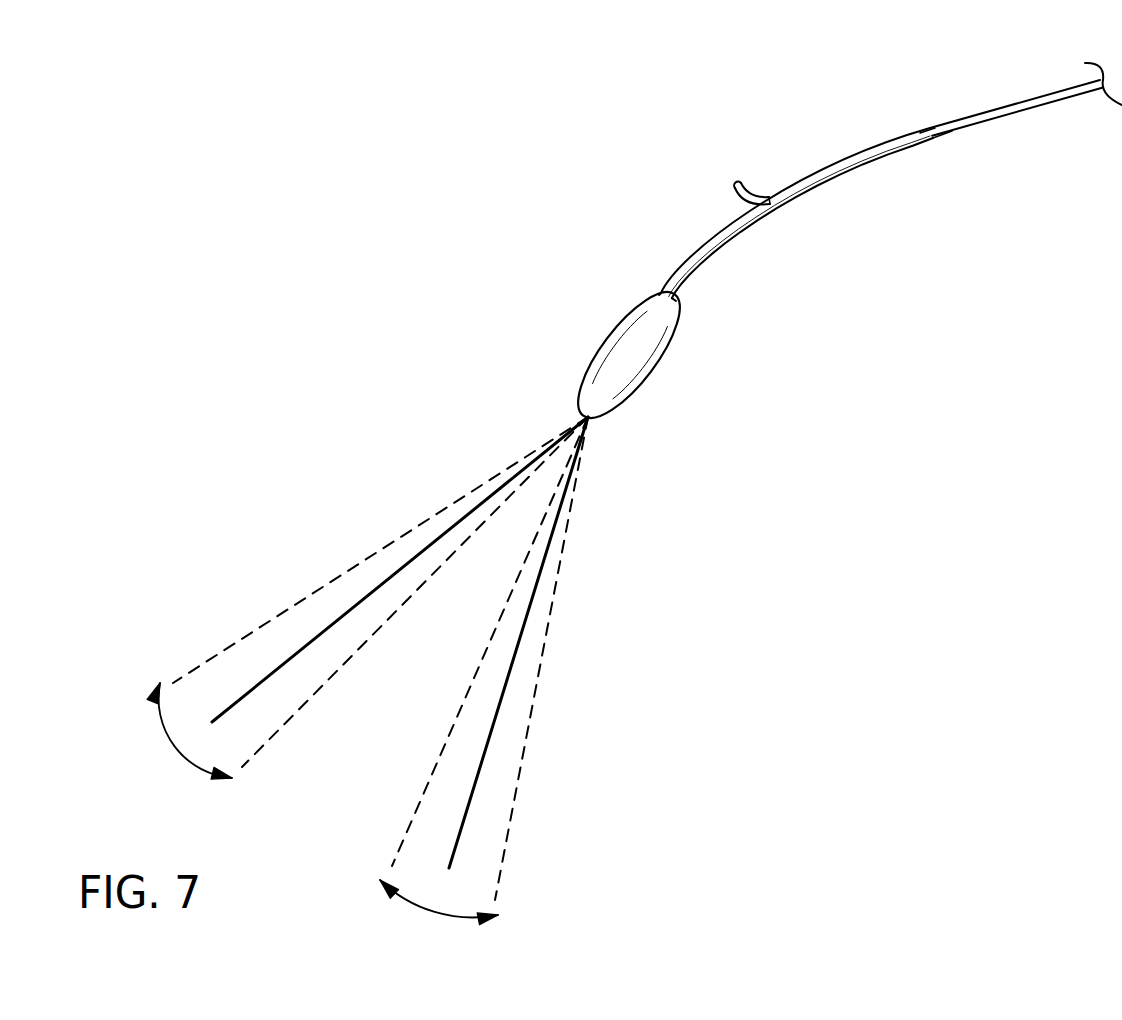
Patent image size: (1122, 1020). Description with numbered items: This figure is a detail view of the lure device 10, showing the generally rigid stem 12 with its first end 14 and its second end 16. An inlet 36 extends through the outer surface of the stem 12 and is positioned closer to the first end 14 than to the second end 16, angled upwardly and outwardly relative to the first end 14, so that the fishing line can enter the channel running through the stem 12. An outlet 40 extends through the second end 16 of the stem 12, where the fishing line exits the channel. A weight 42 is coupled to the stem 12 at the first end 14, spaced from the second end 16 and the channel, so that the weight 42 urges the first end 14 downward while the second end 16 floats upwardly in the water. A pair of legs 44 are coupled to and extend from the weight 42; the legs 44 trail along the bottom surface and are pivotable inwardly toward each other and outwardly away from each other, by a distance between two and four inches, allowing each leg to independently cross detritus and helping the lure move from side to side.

The lure device 10 is at (450, 188).
The stem 12 is at (844, 158).
The first end 14 is at (670, 285).
The second end 16 is at (920, 131).
The inlet 36 is at (776, 206).
The outlet 40 is at (940, 132).
The weight 42 is at (647, 373).
The pair of legs 44 is at (310, 640).